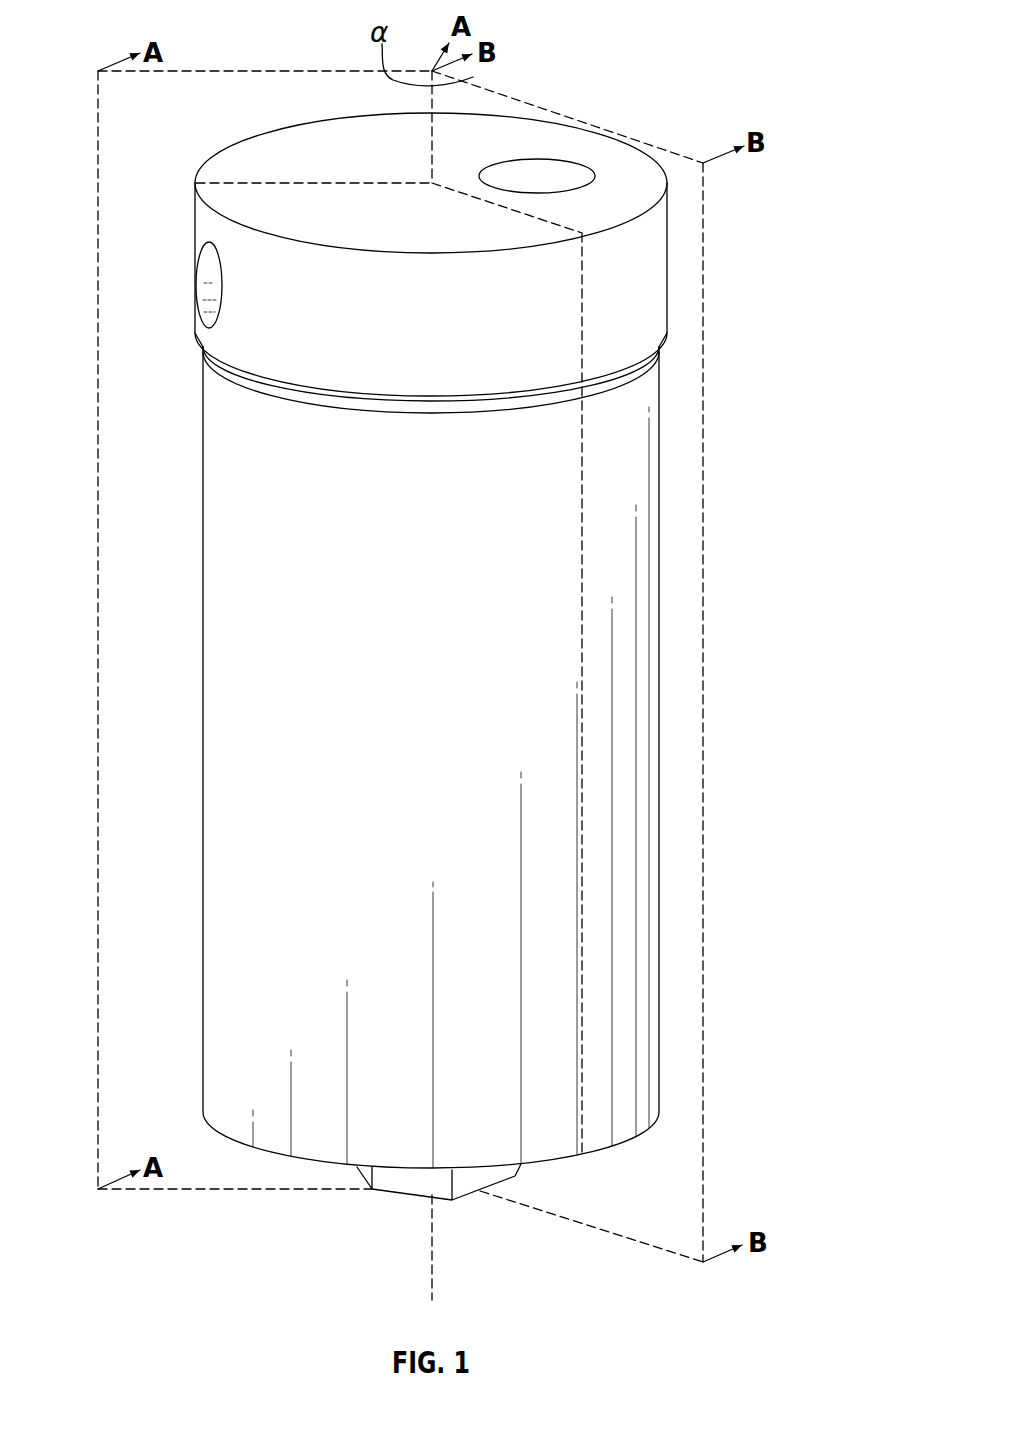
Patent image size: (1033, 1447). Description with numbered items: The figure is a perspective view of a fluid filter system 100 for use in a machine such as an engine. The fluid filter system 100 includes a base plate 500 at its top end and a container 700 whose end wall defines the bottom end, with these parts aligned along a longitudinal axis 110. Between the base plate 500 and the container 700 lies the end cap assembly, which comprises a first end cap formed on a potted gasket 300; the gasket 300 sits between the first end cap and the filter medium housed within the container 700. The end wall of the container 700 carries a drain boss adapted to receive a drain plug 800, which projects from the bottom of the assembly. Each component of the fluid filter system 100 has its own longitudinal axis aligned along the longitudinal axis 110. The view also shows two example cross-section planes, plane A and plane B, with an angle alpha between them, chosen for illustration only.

The fluid filter system 100 is at (697, 32).
The base plate 500 is at (667, 250).
The potted gasket 300 is at (660, 365).
The container 700 is at (660, 533).
The drain plug 800 is at (478, 1192).
The longitudinal axis 110 is at (432, 1277).